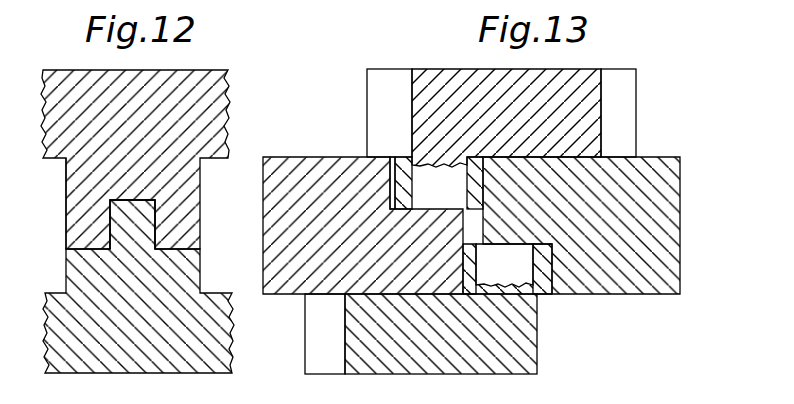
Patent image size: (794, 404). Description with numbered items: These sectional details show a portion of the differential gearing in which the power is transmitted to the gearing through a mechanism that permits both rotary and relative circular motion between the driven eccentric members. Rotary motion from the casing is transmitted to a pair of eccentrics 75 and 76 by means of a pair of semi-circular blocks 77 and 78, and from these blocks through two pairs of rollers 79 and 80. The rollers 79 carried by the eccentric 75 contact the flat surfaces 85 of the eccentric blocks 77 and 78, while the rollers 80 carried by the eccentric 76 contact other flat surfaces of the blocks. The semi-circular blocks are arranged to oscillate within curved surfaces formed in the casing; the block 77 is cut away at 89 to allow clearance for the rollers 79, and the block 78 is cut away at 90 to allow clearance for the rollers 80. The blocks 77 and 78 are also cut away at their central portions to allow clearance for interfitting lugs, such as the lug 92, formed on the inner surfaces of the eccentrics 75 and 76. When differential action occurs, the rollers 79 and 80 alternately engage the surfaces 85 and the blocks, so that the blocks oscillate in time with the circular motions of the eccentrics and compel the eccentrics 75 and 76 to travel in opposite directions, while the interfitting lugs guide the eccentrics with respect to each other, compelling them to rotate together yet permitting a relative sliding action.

In FIG. 12, the eccentric 75 is at (200, 123).
In FIG. 13, the eccentric 75 is at (590, 113).
In FIG. 12, the eccentric 76 is at (217, 352).
In FIG. 13, the eccentric 76 is at (522, 357).
In FIG. 13, the semi-circular block 77 is at (289, 238).
In FIG. 13, the semi-circular block 78 is at (648, 268).
In FIG. 13, the rollers 79 is at (394, 193).
In FIG. 13, the rollers 80 is at (532, 290).
In FIG. 13, the flat surfaces 85 is at (468, 189).
In FIG. 13, the cut-away portion 89 is at (390, 197).
In FIG. 12, the cut-away portion / interfitting lug 90 is at (80, 211).
In FIG. 13, the cut-away portion / interfitting lug 90 is at (558, 275).
In FIG. 12, the interfitting lug 92 is at (128, 228).